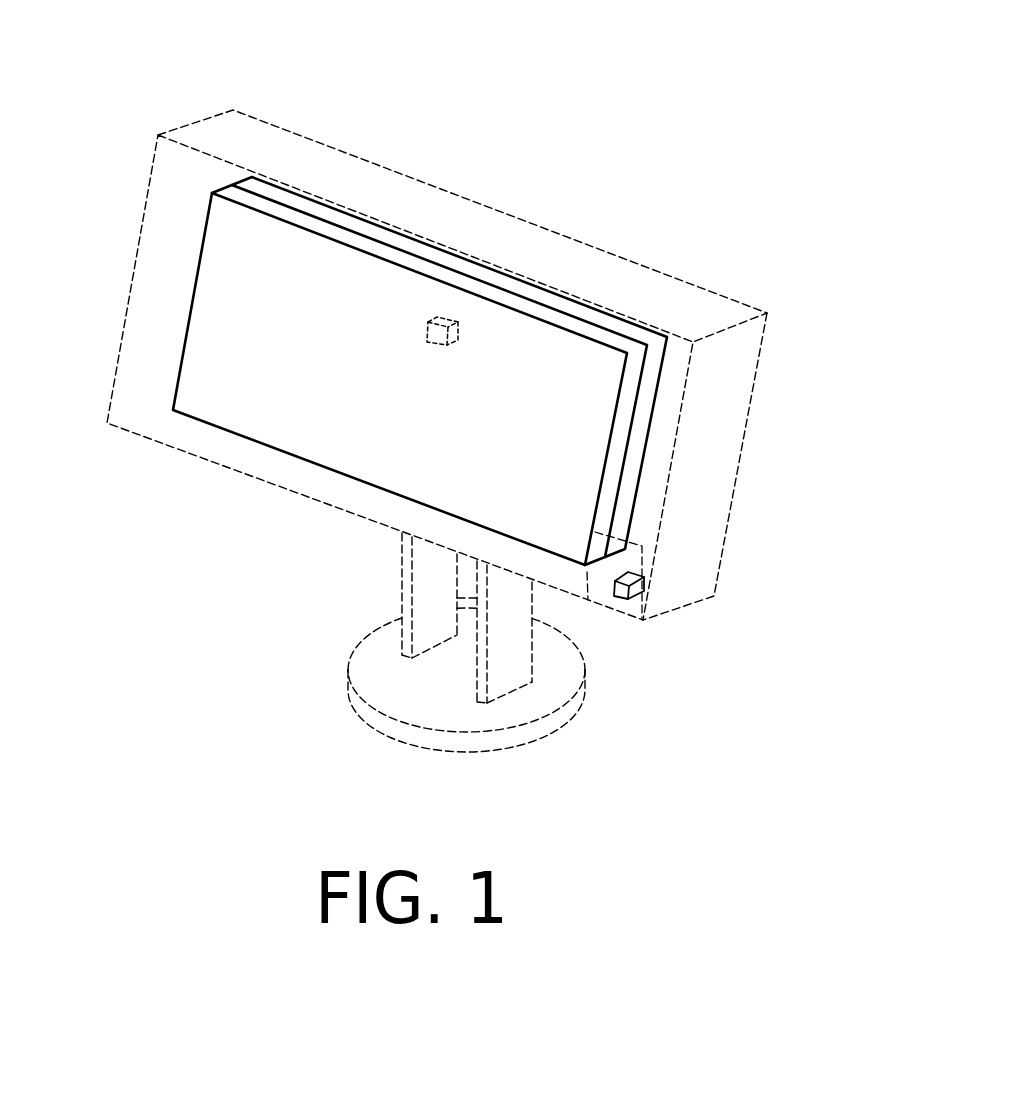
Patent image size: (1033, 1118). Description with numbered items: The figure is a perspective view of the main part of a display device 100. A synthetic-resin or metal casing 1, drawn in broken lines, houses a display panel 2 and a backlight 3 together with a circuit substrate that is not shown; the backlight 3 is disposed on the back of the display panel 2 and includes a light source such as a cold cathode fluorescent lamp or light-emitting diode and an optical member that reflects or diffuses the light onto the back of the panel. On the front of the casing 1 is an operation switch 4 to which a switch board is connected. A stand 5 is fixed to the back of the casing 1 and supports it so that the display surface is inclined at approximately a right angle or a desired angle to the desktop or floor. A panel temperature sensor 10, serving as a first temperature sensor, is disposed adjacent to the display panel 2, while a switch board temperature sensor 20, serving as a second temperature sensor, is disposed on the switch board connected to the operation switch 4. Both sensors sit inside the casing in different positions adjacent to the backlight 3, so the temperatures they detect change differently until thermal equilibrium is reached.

The display device 100 is at (765, 53).
The casing 1 is at (460, 188).
The display panel 2 is at (210, 293).
The backlight 3 is at (294, 208).
The operation switch 4 is at (612, 600).
The stand 5 is at (365, 619).
The panel temperature sensor 10 is at (427, 345).
The switch board temperature sensor 20 is at (648, 583).